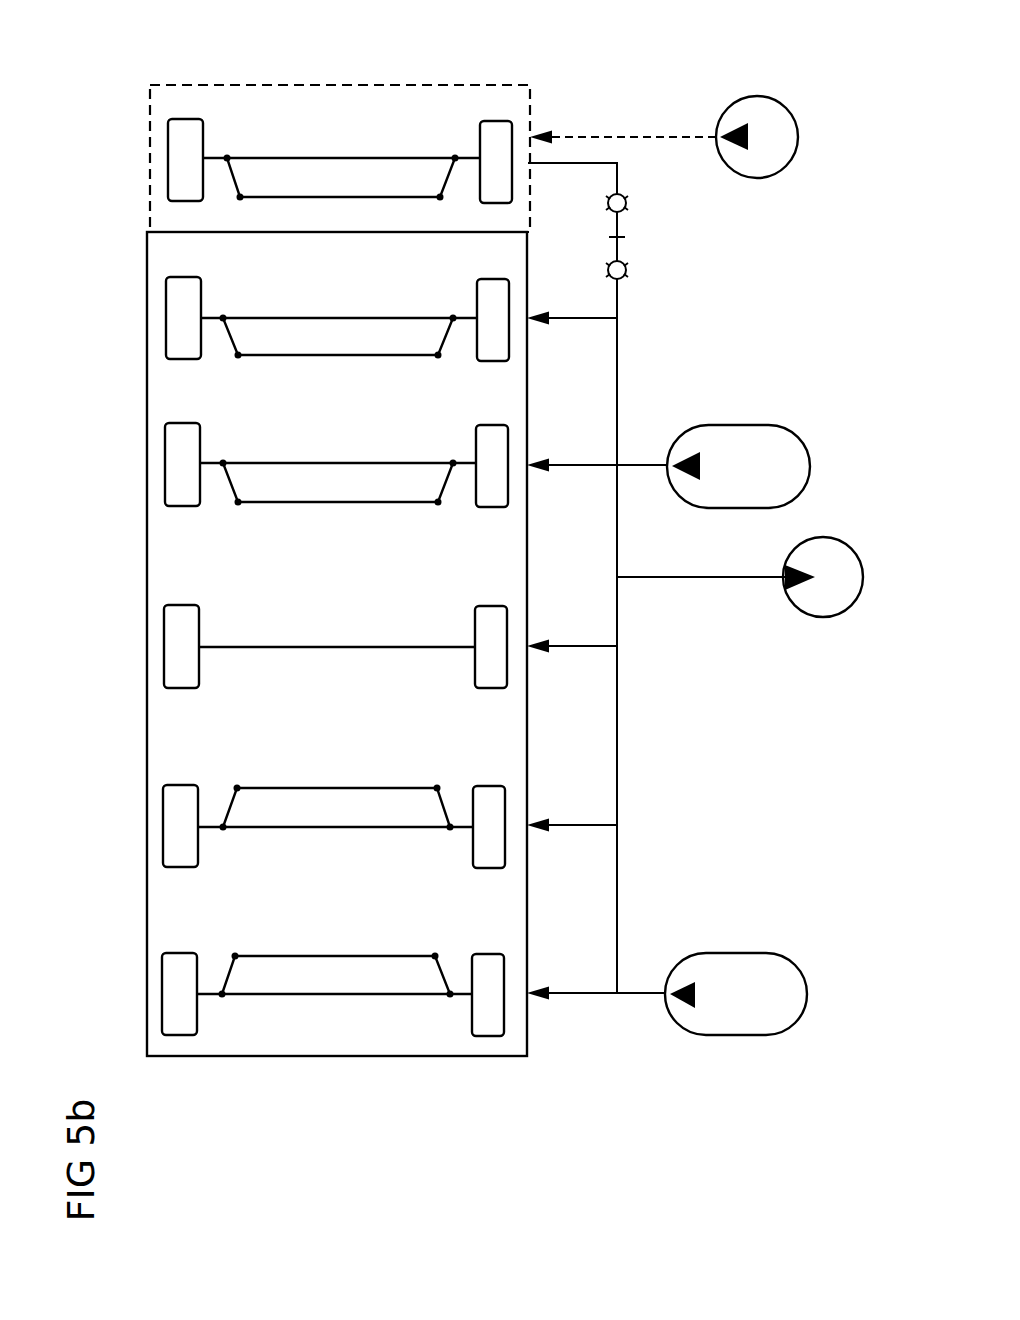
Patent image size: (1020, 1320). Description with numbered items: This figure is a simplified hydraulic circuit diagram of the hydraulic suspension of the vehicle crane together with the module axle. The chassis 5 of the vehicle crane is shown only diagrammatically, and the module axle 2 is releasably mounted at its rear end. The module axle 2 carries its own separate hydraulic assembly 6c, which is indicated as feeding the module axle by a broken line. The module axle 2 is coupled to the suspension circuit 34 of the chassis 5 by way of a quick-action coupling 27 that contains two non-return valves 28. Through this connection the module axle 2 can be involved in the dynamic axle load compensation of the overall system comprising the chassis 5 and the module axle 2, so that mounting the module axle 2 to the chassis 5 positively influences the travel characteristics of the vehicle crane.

The module axle 2 is at (150, 162).
The chassis 5 is at (364, 1056).
The third separate hydraulic assembly 6c is at (727, 107).
The quick-action coupling 27 is at (624, 219).
The non-return valves 28 is at (663, 236).
The suspension circuit 34 is at (615, 743).